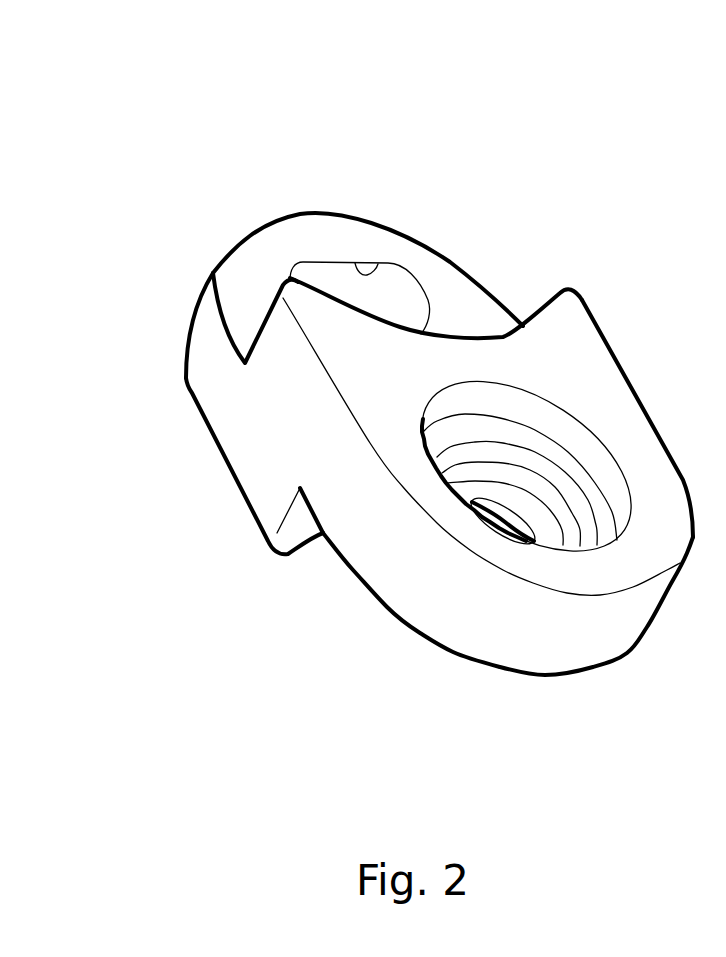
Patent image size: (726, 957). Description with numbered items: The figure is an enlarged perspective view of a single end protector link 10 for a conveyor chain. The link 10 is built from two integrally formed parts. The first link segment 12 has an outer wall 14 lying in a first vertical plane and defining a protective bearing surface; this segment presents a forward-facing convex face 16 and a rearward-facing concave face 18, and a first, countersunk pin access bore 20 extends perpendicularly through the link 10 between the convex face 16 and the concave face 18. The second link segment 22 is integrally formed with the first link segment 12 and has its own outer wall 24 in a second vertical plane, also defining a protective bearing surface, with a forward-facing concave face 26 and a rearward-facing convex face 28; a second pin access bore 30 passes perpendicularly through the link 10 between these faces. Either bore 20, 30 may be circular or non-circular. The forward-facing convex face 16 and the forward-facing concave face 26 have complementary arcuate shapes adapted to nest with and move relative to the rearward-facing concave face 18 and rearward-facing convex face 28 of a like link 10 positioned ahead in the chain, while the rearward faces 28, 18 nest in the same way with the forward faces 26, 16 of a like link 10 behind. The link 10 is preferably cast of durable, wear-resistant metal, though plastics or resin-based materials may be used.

The end protector link 10 is at (470, 169).
The first link segment 12 is at (602, 328).
The outer wall 14 is at (607, 395).
The forward-facing convex face 16 is at (600, 632).
The rearward-facing concave face 18 is at (472, 342).
The first pin access bore 20 is at (600, 473).
The second link segment 22 is at (186, 373).
The outer wall 24 is at (240, 288).
The forward-facing concave face 26 is at (295, 523).
The rearward-facing convex face 28 is at (270, 218).
The second pin access bore 30 is at (388, 262).